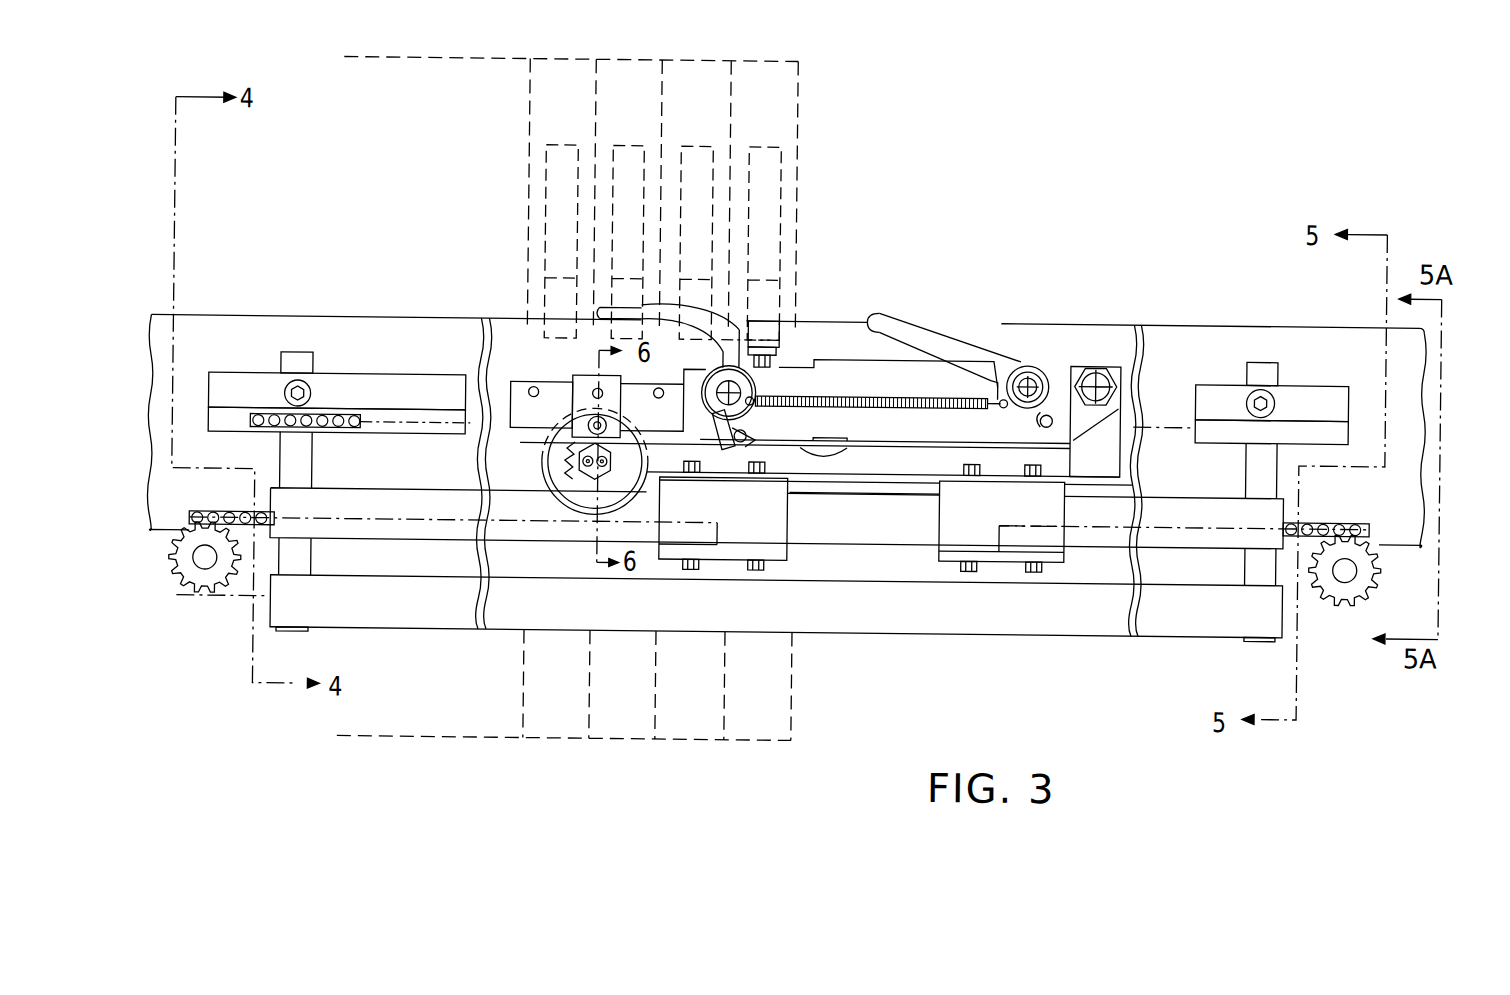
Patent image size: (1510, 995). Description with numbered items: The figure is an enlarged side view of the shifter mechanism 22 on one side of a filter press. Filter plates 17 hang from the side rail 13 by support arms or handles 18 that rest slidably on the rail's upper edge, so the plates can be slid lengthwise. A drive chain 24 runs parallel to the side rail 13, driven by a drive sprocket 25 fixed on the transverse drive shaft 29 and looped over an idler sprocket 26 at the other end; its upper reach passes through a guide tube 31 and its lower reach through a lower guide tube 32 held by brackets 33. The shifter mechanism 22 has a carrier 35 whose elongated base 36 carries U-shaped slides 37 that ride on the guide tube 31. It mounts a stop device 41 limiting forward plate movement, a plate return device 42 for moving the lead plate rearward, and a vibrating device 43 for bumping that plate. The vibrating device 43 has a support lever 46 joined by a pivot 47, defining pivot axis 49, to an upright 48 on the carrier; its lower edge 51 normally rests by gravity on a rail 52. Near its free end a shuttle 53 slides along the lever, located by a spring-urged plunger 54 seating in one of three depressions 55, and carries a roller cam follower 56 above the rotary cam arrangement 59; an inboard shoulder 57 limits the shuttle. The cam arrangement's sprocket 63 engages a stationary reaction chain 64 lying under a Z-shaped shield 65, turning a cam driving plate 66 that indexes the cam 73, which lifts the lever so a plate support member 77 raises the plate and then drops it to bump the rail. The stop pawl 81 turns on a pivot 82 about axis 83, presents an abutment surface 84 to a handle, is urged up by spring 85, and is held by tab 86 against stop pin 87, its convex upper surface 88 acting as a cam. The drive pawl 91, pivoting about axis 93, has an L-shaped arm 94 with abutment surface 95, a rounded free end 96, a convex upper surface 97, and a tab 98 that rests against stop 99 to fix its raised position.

The side rail 13 is at (1321, 340).
The filter plate 17 is at (540, 100).
The support arm or handle 18 is at (550, 198).
The shifter mechanism 22 is at (1063, 340).
The drive chain 24 is at (1323, 522).
The drive sprocket 25 is at (1384, 571).
The idler sprocket 26 is at (179, 582).
The drive shaft 29 is at (1350, 574).
The guide tube 31 is at (413, 508).
The lower guide tube 32 is at (923, 615).
The bracket 33 is at (302, 471).
The carrier or housing 35 is at (814, 505).
The base 36 is at (862, 484).
The U-shaped slide 37 is at (770, 547).
The stop device 41 is at (986, 316).
The plate return device 42 is at (693, 335).
The vibrating device 43 is at (867, 320).
The support lever 46 is at (945, 318).
The pivot 47 is at (1096, 362).
The upright 48 is at (1136, 410).
The pivot axis 49 is at (1073, 437).
The lower edge 51 is at (805, 453).
The rail 52 is at (907, 468).
The shuttle 53 is at (570, 379).
The spring-urged plunger 54 is at (592, 391).
The depression 55 is at (568, 412).
The roller-type cam follower 56 is at (528, 393).
The shoulder 57 is at (683, 441).
The rotary cam arrangement 59 is at (522, 476).
The driving sprocket 63 is at (552, 448).
The reaction chain 64 is at (273, 415).
The shield member 65 is at (277, 380).
The cam driving plate 66 is at (578, 473).
The cam 73 is at (572, 510).
The plate support member 77 is at (765, 346).
The stop pawl 81 is at (1027, 362).
The pivot 82 is at (1069, 384).
The axis 83 is at (1030, 406).
The abutment surface 84 is at (853, 345).
The biasing spring 85 is at (867, 397).
The tab or stop 86 is at (1072, 378).
The stop pin 87 is at (1052, 411).
The upper surface 88 is at (953, 332).
The drive pawl 91 is at (693, 300).
The axis 93 is at (705, 408).
The L-shaped arm 94 is at (667, 304).
The abutment surface 95 is at (750, 333).
The rounded free end 96 is at (596, 315).
The upper surface 97 is at (725, 305).
The tab or stop 98 is at (727, 451).
The stop 99 is at (742, 444).